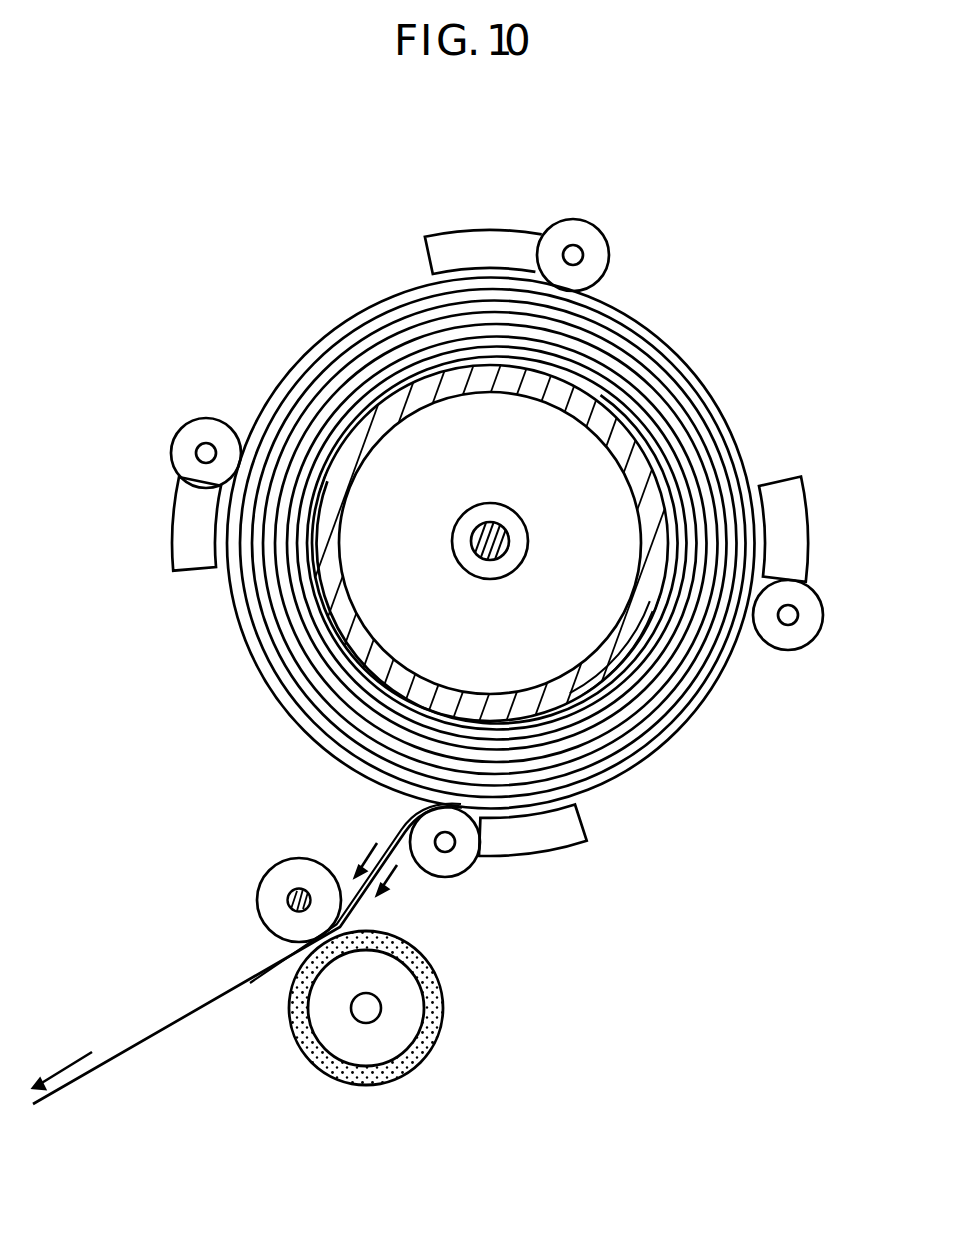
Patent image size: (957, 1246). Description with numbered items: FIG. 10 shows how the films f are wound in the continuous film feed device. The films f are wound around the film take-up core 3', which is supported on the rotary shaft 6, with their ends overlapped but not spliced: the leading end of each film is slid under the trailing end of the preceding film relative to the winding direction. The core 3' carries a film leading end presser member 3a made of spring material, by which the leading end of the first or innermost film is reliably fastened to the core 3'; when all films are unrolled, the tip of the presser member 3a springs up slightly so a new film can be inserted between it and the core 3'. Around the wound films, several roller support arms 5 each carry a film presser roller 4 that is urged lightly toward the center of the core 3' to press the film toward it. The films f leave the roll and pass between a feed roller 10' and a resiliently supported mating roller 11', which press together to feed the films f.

The film take-up core 3' is at (428, 543).
The film leading end presser member 3a is at (660, 648).
The film presser roller 4 is at (592, 240).
The roller support arm 5 is at (468, 238).
The rotary shaft 6 is at (477, 548).
The feed roller 10' is at (406, 1008).
The mating roller 11' is at (269, 889).
The film f is at (178, 1018).